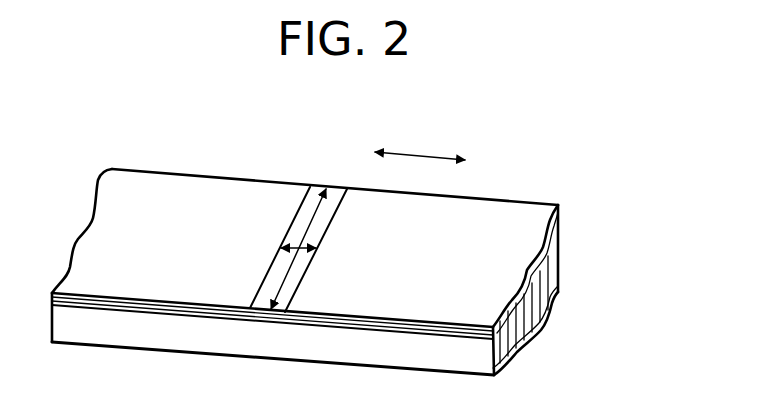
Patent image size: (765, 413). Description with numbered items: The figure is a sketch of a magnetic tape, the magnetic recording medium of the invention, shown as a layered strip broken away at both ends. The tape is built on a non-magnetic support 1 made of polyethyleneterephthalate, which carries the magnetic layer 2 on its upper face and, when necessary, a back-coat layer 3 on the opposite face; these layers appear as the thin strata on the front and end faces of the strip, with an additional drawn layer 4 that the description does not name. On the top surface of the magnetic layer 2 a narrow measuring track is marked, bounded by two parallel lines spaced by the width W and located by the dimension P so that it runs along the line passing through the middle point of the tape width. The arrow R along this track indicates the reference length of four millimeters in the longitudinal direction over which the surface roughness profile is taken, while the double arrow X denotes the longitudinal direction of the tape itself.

The non-magnetic support 1 is at (558, 250).
The magnetic layer 2 is at (512, 213).
The back-coat layer 3 is at (558, 293).
The magnetic recording layer 4 is at (558, 208).
The track pitch P is at (298, 246).
The track width W is at (317, 222).
The reference length R is at (302, 257).
The tape running direction X is at (415, 153).